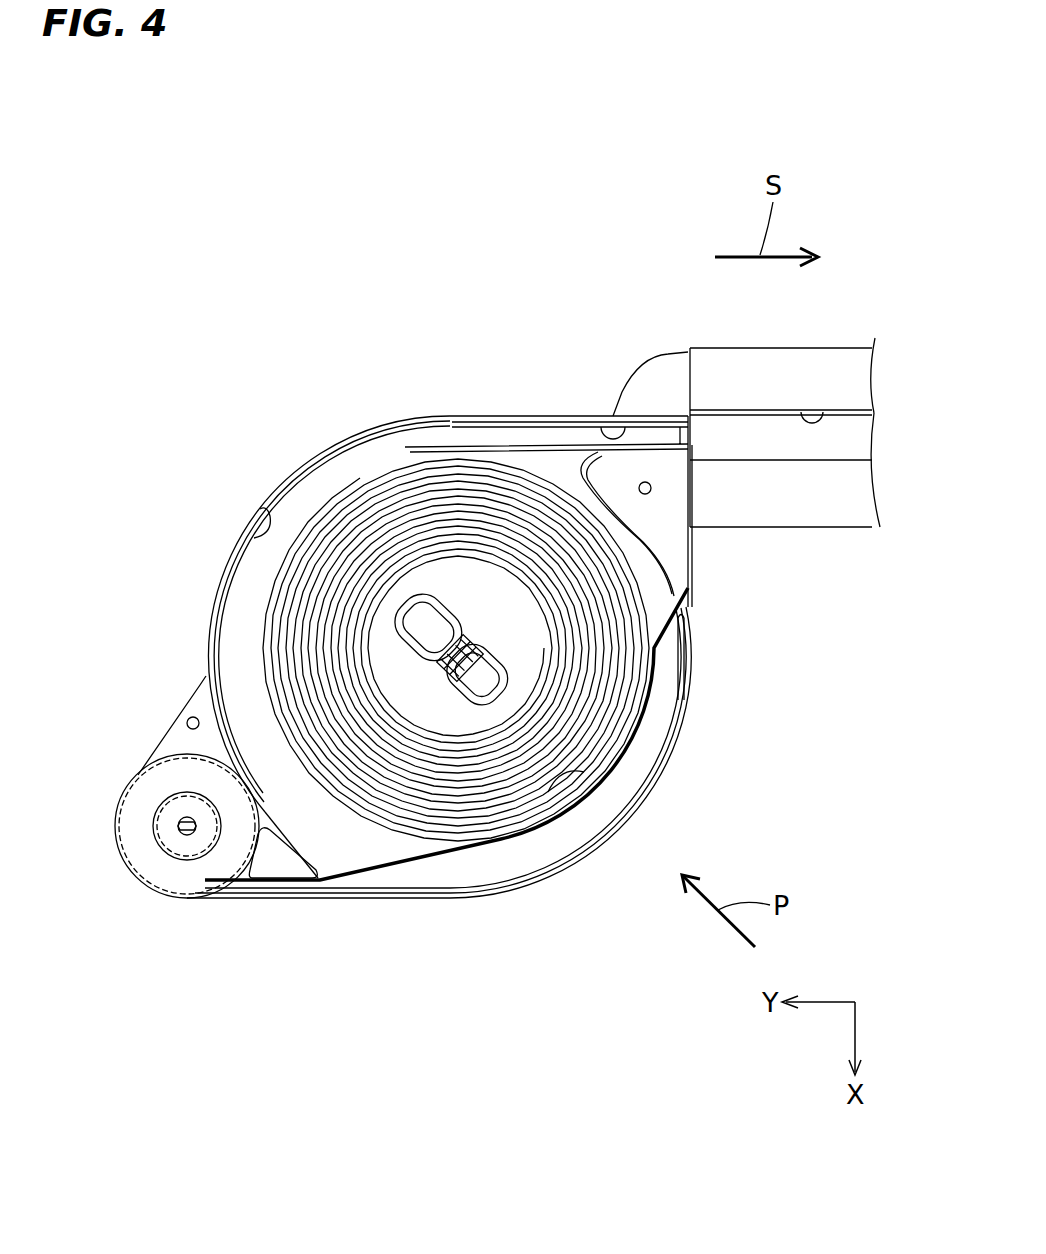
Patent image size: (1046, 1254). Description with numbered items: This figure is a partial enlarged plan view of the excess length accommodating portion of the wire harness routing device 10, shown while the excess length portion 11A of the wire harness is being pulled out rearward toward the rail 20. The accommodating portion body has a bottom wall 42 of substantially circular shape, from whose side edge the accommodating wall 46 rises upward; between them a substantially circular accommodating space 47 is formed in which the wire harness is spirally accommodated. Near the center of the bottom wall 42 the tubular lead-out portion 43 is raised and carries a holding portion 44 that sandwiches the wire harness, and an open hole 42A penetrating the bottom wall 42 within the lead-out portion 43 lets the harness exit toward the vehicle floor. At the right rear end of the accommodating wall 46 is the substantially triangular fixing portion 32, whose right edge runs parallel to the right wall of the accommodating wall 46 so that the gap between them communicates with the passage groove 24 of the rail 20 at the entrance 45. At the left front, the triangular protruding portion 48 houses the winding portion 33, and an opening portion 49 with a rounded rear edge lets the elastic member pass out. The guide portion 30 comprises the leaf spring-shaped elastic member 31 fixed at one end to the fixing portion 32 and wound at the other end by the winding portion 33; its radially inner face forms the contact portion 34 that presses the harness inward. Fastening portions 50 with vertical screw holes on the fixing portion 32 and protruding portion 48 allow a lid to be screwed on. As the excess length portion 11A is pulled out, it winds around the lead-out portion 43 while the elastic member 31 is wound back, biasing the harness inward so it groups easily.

The wire harness routing device 10 is at (527, 318).
The excess length portion 11A is at (432, 455).
The rail 20 is at (792, 513).
The passage groove 24 is at (830, 405).
The guide portion 30 is at (388, 868).
The elastic member 31 is at (438, 850).
The fixing portion 32 is at (675, 557).
The winding portion 33 is at (150, 860).
The contact portion 34 is at (548, 778).
The bottom wall 42 is at (628, 770).
The open hole 42A is at (383, 665).
The lead-out portion 43 is at (417, 607).
The holding portion 44 is at (453, 623).
The entrance 45 is at (610, 428).
The accommodating wall 46 is at (457, 425).
The accommodating space 47 is at (255, 535).
The protruding portion 48 is at (167, 750).
The opening portion 49 is at (322, 882).
The fastening portion 50 is at (653, 488).